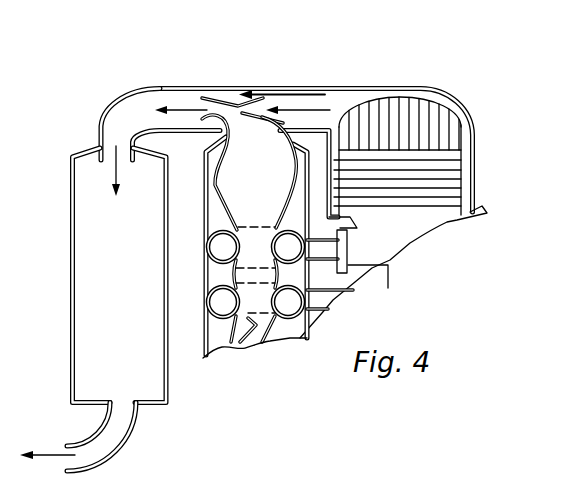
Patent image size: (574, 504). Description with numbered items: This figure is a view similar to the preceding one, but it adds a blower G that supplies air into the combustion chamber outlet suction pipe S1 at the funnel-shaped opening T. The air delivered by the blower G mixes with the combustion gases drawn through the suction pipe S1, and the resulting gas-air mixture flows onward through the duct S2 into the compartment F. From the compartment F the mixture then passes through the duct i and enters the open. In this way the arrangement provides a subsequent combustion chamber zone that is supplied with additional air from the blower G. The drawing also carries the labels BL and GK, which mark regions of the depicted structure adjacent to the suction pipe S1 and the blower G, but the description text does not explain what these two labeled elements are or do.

The combustion chamber outlet suction pipe S1 is at (221, 108).
The duct S2 is at (128, 123).
The funnel-shaped opening T is at (252, 108).
The blow channel with rollers BL is at (272, 200).
The cooler block GK is at (367, 95).
The blower G is at (478, 207).
The compartment F is at (85, 273).
The duct i is at (110, 440).